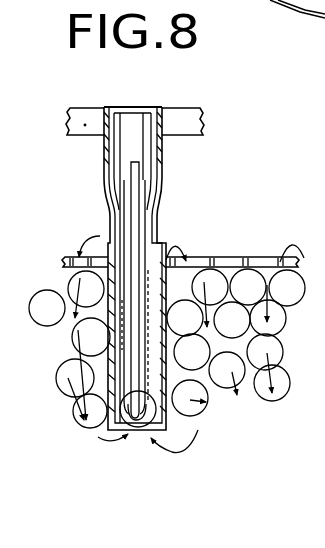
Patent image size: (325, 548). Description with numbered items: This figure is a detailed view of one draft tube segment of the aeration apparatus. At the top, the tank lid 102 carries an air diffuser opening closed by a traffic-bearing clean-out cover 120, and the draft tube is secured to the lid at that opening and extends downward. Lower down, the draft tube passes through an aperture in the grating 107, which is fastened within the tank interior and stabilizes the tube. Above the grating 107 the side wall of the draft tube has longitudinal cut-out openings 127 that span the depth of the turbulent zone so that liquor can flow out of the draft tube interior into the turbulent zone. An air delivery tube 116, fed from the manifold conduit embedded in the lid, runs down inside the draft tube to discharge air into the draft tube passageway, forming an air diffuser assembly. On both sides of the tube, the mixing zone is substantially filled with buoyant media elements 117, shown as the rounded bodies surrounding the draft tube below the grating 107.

The lid 102 is at (184, 125).
The grating 107 is at (264, 257).
The air delivery tube 116 is at (103, 335).
The buoyant media elements 117 is at (252, 353).
The clean-out cover 120 is at (141, 107).
The longitudinal cut-out openings 127 is at (110, 219).